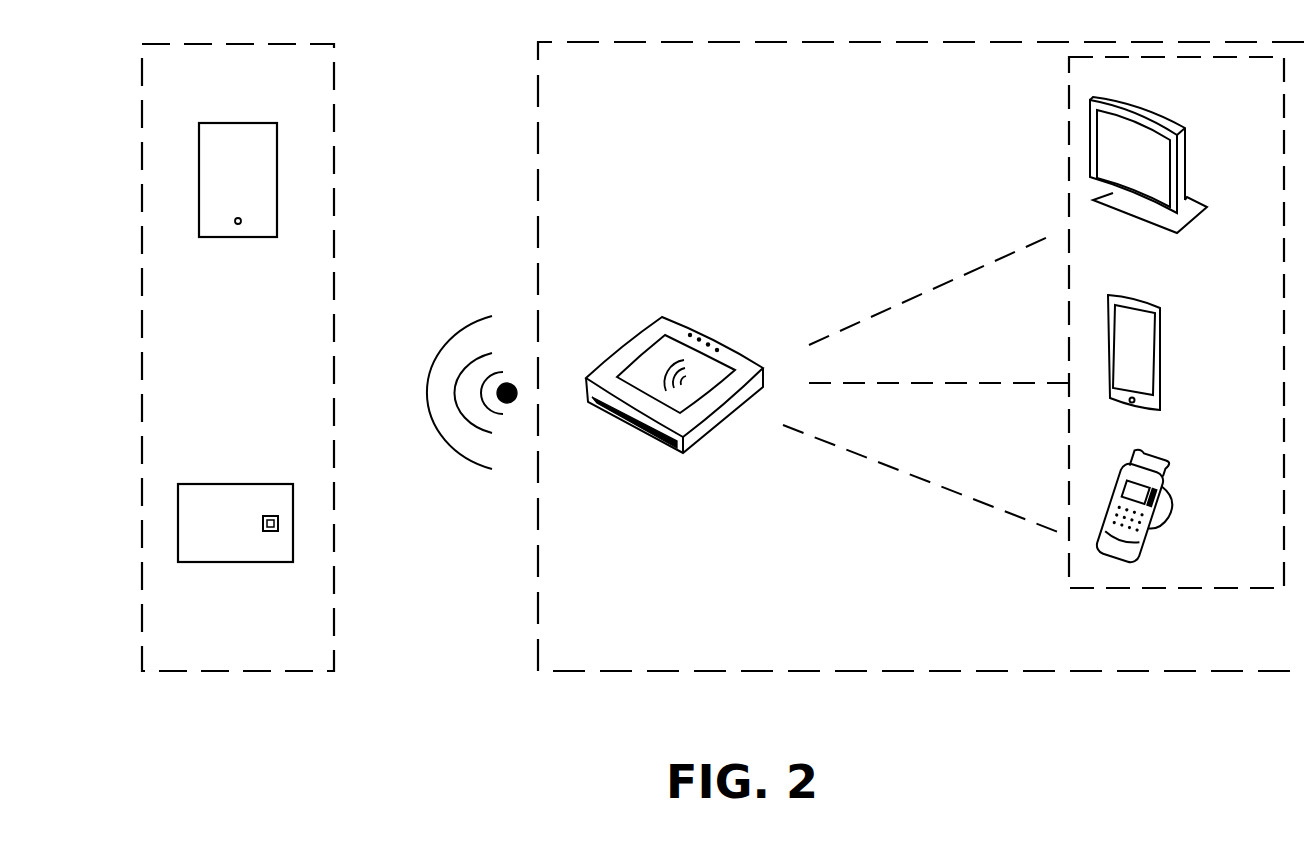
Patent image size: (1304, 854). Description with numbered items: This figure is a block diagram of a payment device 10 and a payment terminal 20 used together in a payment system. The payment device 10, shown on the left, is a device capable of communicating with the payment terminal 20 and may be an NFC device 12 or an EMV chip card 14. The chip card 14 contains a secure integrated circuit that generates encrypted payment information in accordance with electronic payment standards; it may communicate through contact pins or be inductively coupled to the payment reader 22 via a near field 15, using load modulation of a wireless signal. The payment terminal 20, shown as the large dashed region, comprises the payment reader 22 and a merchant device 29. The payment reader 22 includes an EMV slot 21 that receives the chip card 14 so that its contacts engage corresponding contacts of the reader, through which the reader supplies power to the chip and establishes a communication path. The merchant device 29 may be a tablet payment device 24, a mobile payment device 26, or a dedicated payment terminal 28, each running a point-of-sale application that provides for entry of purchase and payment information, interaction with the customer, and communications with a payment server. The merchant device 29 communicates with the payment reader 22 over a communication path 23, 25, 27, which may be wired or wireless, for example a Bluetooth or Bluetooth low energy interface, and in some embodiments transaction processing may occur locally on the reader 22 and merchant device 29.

The payment device 10 is at (223, 44).
The NFC device 12 is at (260, 122).
The EMV chip card 14 is at (266, 484).
The near field 15 is at (471, 303).
The payment terminal 20 is at (933, 672).
The EMV slot 21 is at (623, 433).
The payment reader 22 is at (718, 333).
The communication path 23 is at (979, 267).
The tablet payment device 24 is at (1175, 118).
The communication path 25 is at (997, 383).
The mobile payment device 26 is at (1162, 327).
The communication path 27 is at (990, 502).
The dedicated payment terminal 28 is at (1172, 483).
The merchant device 29 is at (1145, 592).